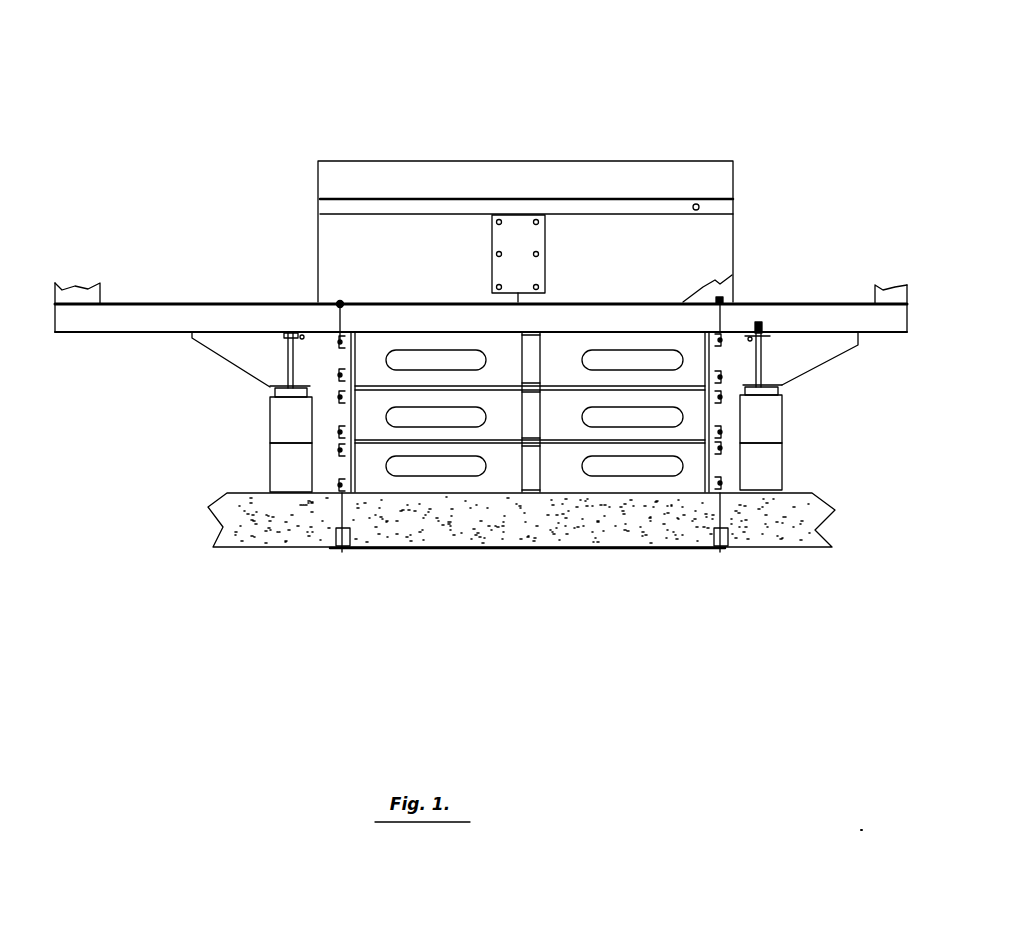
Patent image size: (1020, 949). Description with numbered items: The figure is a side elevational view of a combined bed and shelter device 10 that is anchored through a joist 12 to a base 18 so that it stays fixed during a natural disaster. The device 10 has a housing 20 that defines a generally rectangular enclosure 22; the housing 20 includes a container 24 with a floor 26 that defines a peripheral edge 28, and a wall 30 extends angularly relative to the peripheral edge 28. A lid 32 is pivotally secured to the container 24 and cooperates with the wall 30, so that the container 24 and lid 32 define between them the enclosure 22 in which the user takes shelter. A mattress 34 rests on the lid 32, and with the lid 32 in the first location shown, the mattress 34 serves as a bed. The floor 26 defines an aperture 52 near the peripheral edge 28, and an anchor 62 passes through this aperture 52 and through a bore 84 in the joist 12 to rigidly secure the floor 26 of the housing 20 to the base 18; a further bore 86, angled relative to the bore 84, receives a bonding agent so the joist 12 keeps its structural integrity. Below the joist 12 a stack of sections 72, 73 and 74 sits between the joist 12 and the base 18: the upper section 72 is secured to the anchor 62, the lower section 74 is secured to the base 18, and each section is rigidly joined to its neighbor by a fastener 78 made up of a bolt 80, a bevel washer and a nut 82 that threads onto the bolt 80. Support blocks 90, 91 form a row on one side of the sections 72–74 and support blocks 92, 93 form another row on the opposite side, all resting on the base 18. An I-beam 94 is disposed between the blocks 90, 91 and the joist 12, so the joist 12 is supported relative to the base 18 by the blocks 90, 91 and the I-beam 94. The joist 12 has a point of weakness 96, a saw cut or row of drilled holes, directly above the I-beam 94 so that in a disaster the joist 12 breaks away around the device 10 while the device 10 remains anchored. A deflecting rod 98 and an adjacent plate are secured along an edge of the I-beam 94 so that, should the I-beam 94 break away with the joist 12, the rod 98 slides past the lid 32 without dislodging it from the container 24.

The combined bed and shelter device 10 is at (342, 118).
The joist 12 is at (163, 318).
The base 18 is at (556, 536).
The housing 20 is at (590, 162).
The enclosure 22 is at (405, 255).
The container 24 is at (698, 245).
The floor 26 is at (400, 303).
The peripheral edge 28 is at (350, 304).
The wall 30 is at (413, 222).
The lid 32 is at (542, 207).
The mattress 34 is at (467, 177).
The aperture 52 is at (433, 468).
The anchor 62 is at (272, 387).
The section 72 is at (534, 364).
The section 73 is at (534, 420).
The section 74 is at (534, 469).
The fastener 78 is at (364, 404).
The bolt 80 is at (341, 397).
The nut 82 is at (341, 397).
The bore 84 is at (340, 303).
The further bore 86 is at (336, 314).
The support block 90 is at (291, 414).
The support block 91 is at (291, 467).
The support block 92 is at (799, 382).
The support block 93 is at (761, 466).
The I-beam 94 is at (287, 345).
The point of weakness 96 is at (290, 325).
The deflecting rod 98 is at (290, 322).